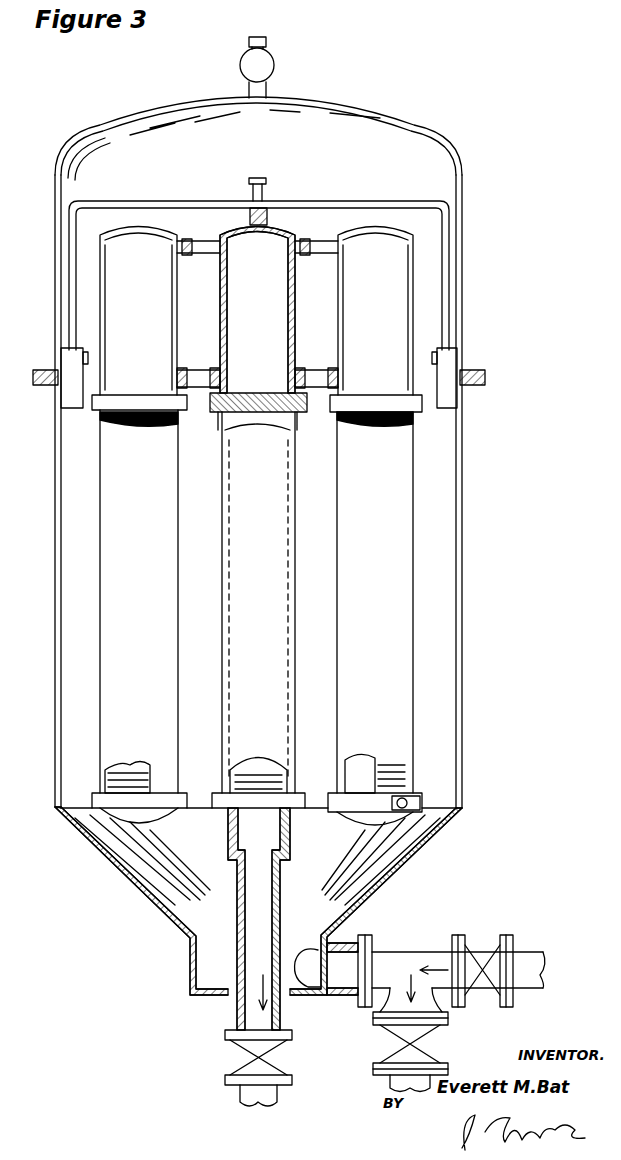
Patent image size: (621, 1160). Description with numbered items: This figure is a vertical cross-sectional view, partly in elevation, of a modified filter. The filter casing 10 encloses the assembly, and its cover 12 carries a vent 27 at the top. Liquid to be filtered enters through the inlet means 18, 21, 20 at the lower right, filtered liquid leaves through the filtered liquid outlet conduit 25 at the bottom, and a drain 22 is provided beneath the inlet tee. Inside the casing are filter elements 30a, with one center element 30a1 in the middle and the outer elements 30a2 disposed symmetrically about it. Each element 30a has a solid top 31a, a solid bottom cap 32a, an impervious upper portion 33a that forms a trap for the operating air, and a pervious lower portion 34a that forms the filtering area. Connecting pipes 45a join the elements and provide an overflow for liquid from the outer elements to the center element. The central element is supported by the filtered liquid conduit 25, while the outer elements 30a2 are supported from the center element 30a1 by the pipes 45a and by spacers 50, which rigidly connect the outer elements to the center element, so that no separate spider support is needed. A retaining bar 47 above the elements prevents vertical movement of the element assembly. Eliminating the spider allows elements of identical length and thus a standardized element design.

The filter casing 10 is at (463, 497).
The dome top of shell 12 is at (360, 108).
The vent 27 is at (276, 58).
The retaining bar 47 is at (448, 240).
The solid top 31a is at (150, 224).
The impervious upper portion 33a is at (339, 316).
The spacers 50 is at (318, 242).
The connecting pipes 45a is at (213, 352).
The pervious lower portion 34a is at (222, 656).
The filter elements 30a is at (337, 569).
The center element 30a1 is at (297, 628).
The outer elements 30a2 is at (415, 638).
The solid bottom cap 32a is at (105, 850).
The filtered liquid outlet conduit 25 is at (283, 880).
The inlet means 20 is at (292, 985).
The inlet means 21 is at (350, 945).
The inlet means 18 is at (445, 945).
The drain 22 is at (440, 1005).